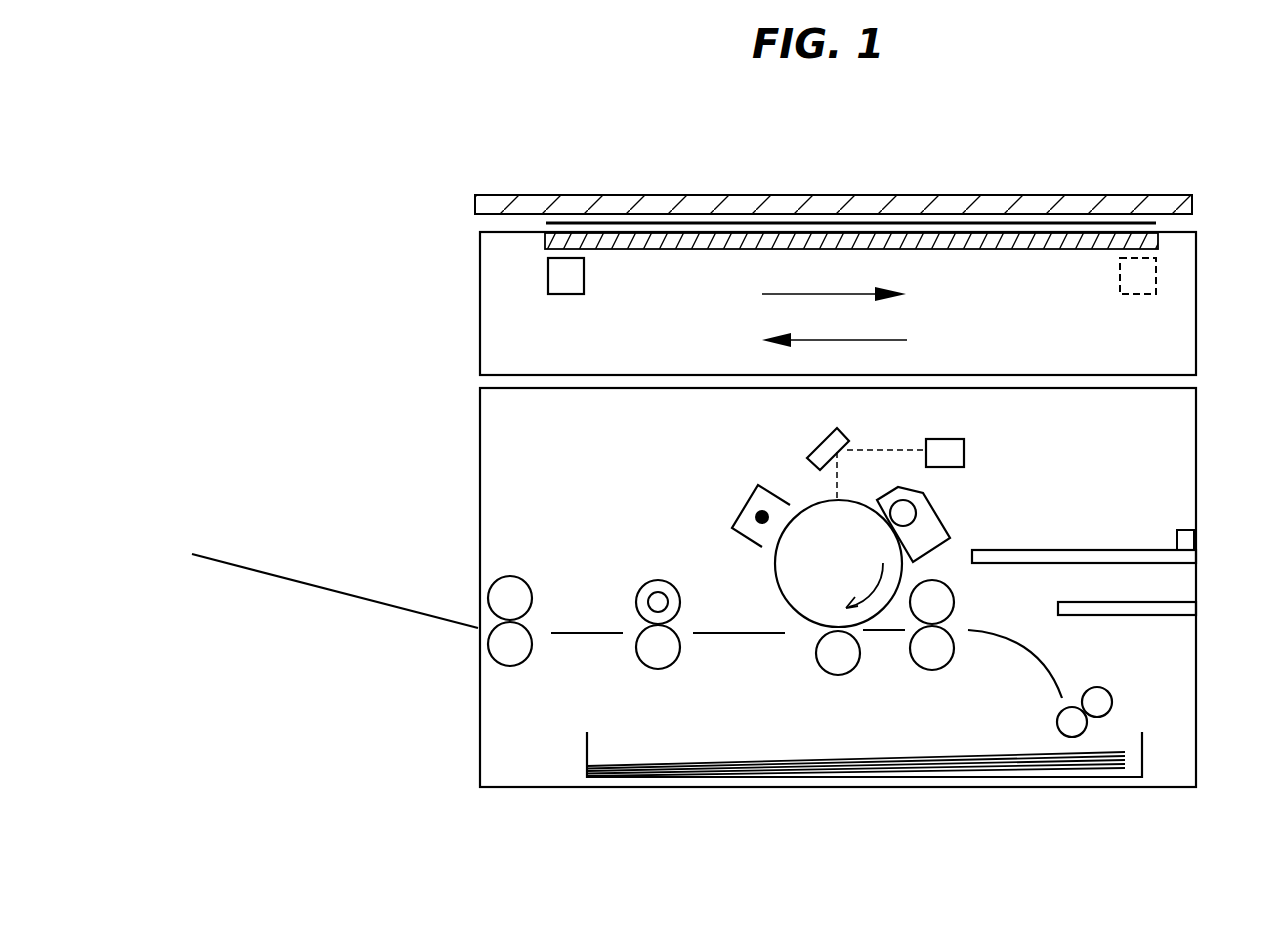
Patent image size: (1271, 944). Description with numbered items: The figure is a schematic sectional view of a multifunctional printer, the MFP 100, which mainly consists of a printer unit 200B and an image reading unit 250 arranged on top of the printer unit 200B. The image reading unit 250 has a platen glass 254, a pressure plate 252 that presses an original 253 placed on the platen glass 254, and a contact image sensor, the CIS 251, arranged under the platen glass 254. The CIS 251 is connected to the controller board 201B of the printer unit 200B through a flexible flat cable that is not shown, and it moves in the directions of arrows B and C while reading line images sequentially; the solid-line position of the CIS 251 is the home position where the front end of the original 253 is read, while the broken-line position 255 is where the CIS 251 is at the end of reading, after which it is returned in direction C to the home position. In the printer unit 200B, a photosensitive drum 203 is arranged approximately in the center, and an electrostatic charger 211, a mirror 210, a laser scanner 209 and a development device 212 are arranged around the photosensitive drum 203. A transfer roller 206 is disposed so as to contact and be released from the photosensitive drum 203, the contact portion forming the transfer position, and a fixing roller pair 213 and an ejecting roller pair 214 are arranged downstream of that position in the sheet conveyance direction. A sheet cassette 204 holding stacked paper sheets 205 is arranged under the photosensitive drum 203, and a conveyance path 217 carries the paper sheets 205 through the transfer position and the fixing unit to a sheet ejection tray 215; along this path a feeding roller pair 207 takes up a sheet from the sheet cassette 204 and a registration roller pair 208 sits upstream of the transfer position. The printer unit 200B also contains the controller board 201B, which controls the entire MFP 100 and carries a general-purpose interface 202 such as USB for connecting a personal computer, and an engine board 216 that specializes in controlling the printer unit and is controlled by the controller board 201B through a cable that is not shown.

The MFP 100 is at (1052, 162).
The image reading unit 250 is at (480, 300).
The pressure plate 252 is at (570, 195).
The original 253 is at (672, 222).
The platen glass 254 is at (678, 250).
The contact image sensor (CIS) 251 is at (568, 296).
The position 255 is at (1137, 296).
The printer unit 200B is at (480, 440).
The sheet ejection tray 215 is at (310, 581).
The ejecting roller pair 214 is at (535, 617).
The fixing roller pair 213 is at (682, 610).
The transfer roller 206 is at (816, 645).
The photosensitive drum 203 is at (775, 567).
The electrostatic charger 211 is at (735, 510).
The mirror 210 is at (810, 448).
The laser scanner 209 is at (966, 450).
The development device 212 is at (948, 520).
The registration roller pair 208 is at (952, 624).
The controller board 201B is at (1088, 548).
The interface (I/F) 202 is at (1197, 540).
The engine board 216 is at (1122, 616).
The conveyance path 217 is at (1023, 656).
The feeding roller pair 207 is at (1057, 722).
The sheet cassette 204 is at (1043, 778).
The paper sheets 205 is at (875, 755).